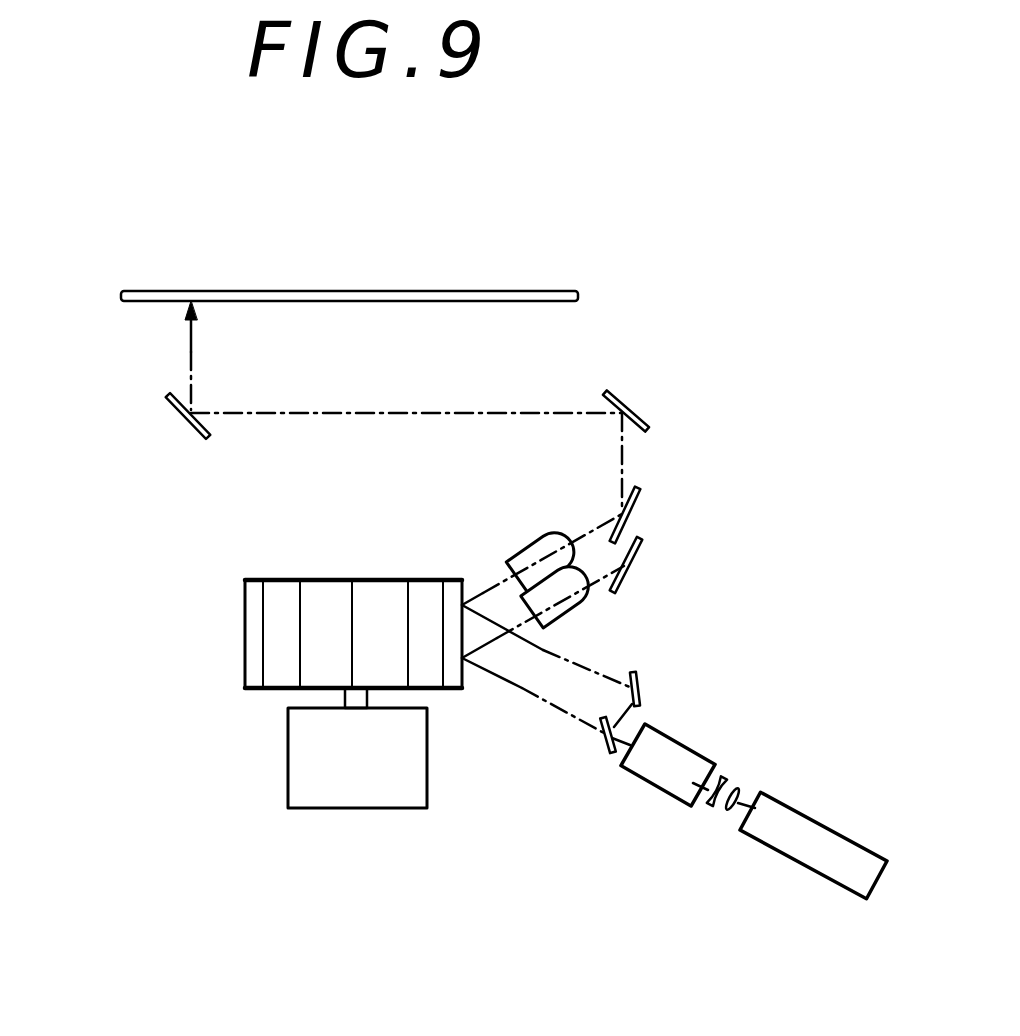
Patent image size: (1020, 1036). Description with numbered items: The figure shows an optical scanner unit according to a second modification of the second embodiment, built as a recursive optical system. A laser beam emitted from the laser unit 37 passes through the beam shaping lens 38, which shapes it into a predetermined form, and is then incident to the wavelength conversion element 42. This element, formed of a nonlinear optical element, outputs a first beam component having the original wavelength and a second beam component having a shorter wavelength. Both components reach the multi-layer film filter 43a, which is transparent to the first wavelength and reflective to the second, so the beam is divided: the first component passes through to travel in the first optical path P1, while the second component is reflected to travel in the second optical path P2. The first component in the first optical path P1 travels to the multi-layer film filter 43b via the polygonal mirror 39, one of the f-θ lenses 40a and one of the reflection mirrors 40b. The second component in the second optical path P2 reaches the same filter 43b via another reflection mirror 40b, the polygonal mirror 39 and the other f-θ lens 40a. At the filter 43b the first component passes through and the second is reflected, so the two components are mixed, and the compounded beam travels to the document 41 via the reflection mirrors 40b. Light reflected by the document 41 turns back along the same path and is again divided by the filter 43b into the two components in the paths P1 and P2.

The laser unit 37 is at (813, 813).
The beam shaping lens 38 is at (733, 777).
The polygonal mirror 39 is at (320, 628).
The f-θ lenses 40a is at (541, 606).
The reflection mirrors 40b is at (180, 426).
The document 41 is at (452, 291).
The wavelength conversion element 42 is at (660, 790).
The multi-layer film filter 43a is at (601, 748).
The multi-layer film filter 43b is at (640, 493).
The first optical path P1 is at (539, 688).
The second optical path P2 is at (546, 590).